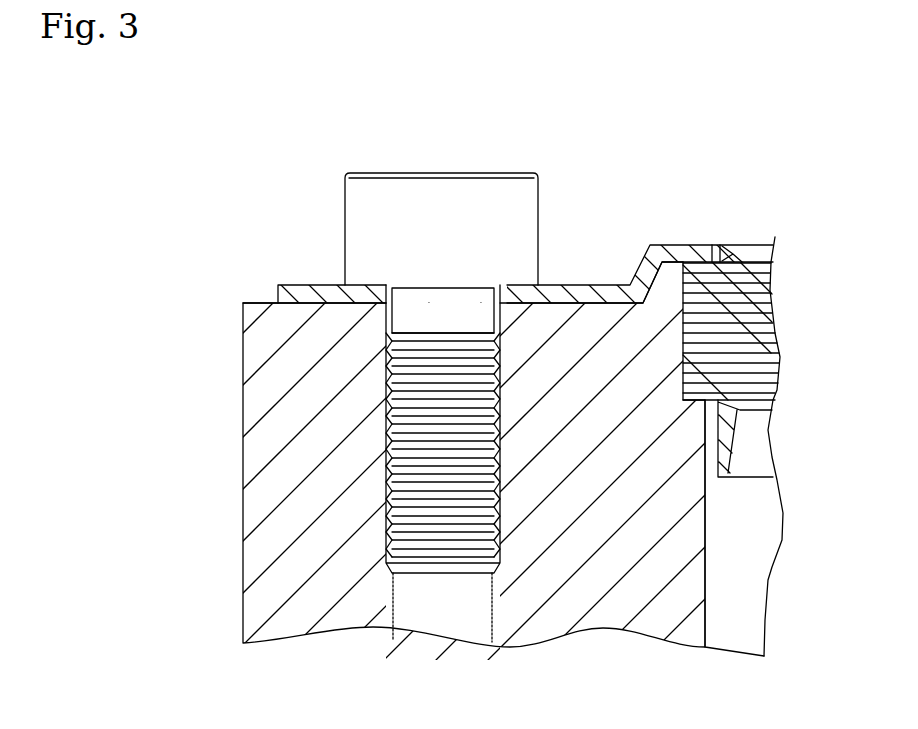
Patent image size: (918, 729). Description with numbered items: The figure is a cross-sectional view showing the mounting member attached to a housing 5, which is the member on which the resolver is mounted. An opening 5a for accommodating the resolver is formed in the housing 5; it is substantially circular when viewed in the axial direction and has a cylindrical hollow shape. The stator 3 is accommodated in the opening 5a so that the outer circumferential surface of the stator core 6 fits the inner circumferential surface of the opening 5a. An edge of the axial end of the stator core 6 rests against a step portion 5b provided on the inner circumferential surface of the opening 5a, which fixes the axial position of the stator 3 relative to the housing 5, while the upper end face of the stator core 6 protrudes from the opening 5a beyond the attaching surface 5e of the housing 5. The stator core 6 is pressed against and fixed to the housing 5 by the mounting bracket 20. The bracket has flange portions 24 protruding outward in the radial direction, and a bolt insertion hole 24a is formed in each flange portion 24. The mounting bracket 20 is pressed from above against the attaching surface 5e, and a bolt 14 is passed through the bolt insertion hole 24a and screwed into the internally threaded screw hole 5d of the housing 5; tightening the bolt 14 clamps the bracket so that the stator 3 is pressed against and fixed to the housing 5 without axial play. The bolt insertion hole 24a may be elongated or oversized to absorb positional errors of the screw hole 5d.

The stator 3 is at (746, 230).
The housing 5 is at (622, 605).
The opening 5a is at (707, 543).
The step portion 5b is at (715, 378).
The screw hole 5d is at (493, 592).
The attaching surface 5e is at (262, 302).
The stator core 6 is at (772, 273).
The bolt 14 is at (444, 172).
The mounting bracket 20 is at (591, 284).
The flange portion 24 is at (318, 284).
The bolt insertion hole 24a is at (383, 285).